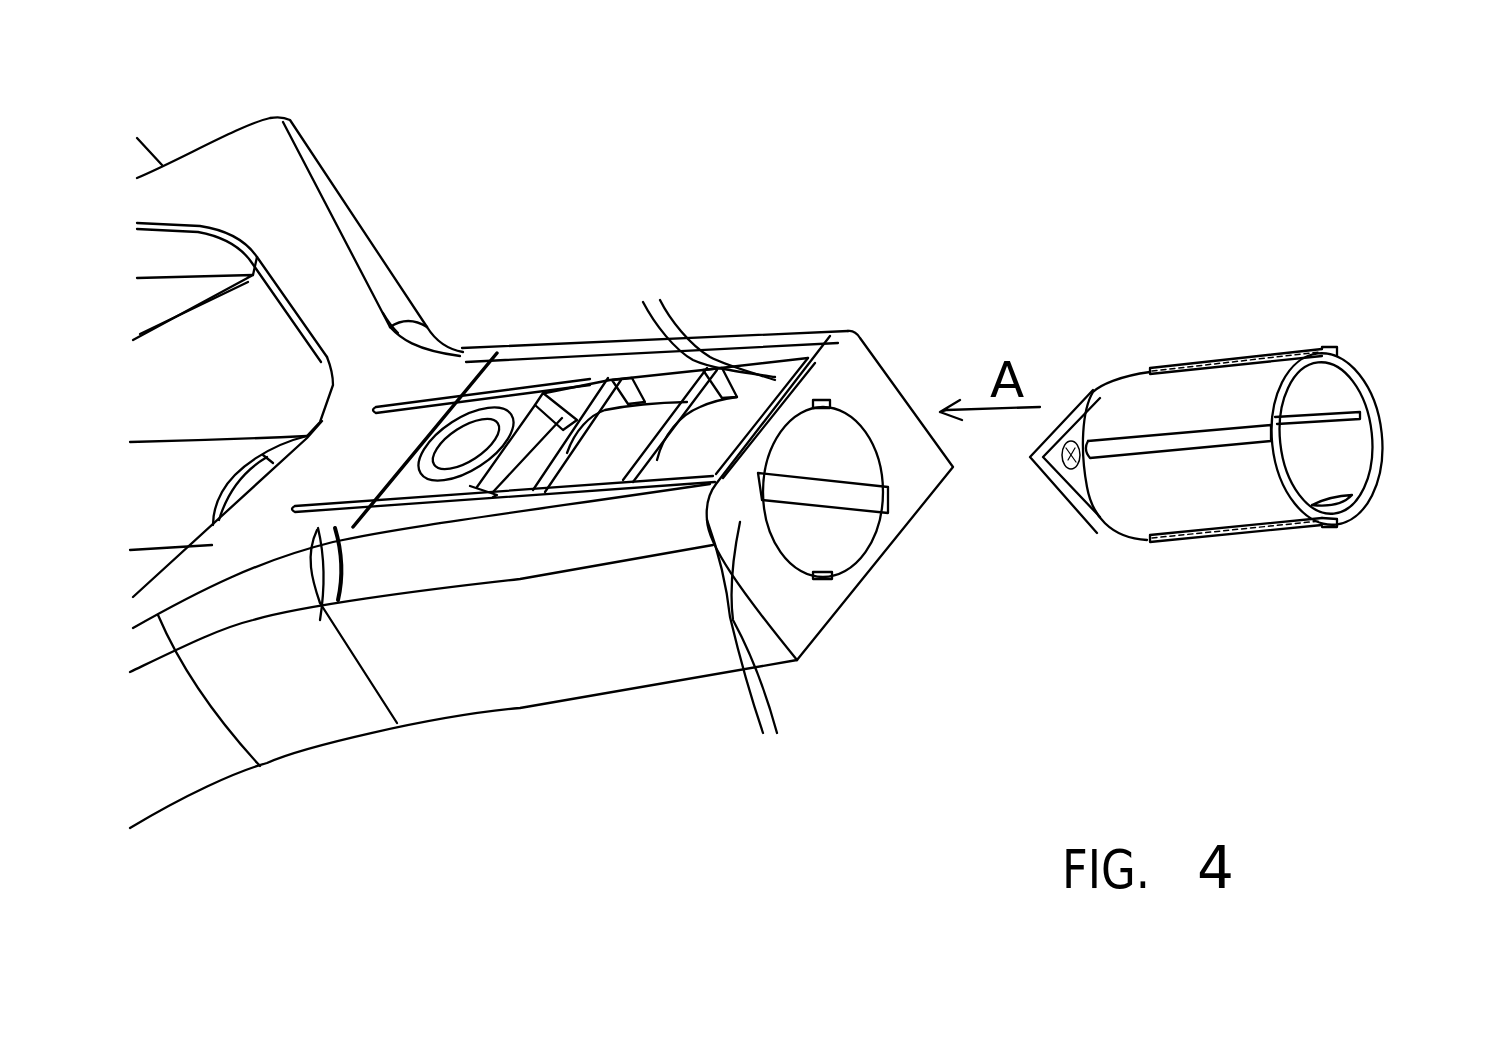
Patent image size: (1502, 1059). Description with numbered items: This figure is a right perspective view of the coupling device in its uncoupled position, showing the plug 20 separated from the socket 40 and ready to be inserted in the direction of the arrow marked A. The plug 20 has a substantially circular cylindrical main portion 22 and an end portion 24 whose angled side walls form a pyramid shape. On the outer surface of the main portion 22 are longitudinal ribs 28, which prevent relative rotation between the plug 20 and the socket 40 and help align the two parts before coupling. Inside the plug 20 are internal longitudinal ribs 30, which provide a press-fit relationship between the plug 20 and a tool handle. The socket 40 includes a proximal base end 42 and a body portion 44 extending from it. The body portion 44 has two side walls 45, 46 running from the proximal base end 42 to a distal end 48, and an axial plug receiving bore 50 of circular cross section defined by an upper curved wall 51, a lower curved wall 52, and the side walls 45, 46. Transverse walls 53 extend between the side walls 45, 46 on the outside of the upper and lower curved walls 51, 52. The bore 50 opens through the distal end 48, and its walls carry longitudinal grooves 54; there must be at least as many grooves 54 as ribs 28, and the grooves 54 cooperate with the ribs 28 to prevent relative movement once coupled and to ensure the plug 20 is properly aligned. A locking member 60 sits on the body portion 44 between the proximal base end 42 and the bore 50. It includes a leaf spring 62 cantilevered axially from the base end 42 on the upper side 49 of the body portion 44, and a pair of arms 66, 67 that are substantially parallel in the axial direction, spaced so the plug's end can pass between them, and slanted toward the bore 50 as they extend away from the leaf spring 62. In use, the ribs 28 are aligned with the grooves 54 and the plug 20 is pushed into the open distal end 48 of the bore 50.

The plug 20 is at (1302, 323).
The main portion 22 is at (1120, 407).
The end portion 24 is at (1073, 520).
The longitudinal ribs 28 is at (1203, 433).
The internal longitudinal ribs 30 is at (1338, 418).
The socket 40 is at (823, 217).
The proximal base end 42 is at (340, 417).
The body portion 44 is at (320, 603).
The side wall 45 is at (660, 627).
The side wall 46 is at (840, 430).
The distal end 48 is at (883, 397).
The upper side 49 is at (493, 380).
The plug receiving bore 50 is at (827, 533).
The upper curved wall 51 is at (600, 457).
The lower curved wall 52 is at (833, 580).
The transverse walls 53 is at (620, 398).
The longitudinal grooves 54 is at (820, 403).
The locking member 60 is at (430, 492).
The leaf spring 62 is at (400, 433).
The arm 66 is at (548, 427).
The arm 67 is at (487, 490).